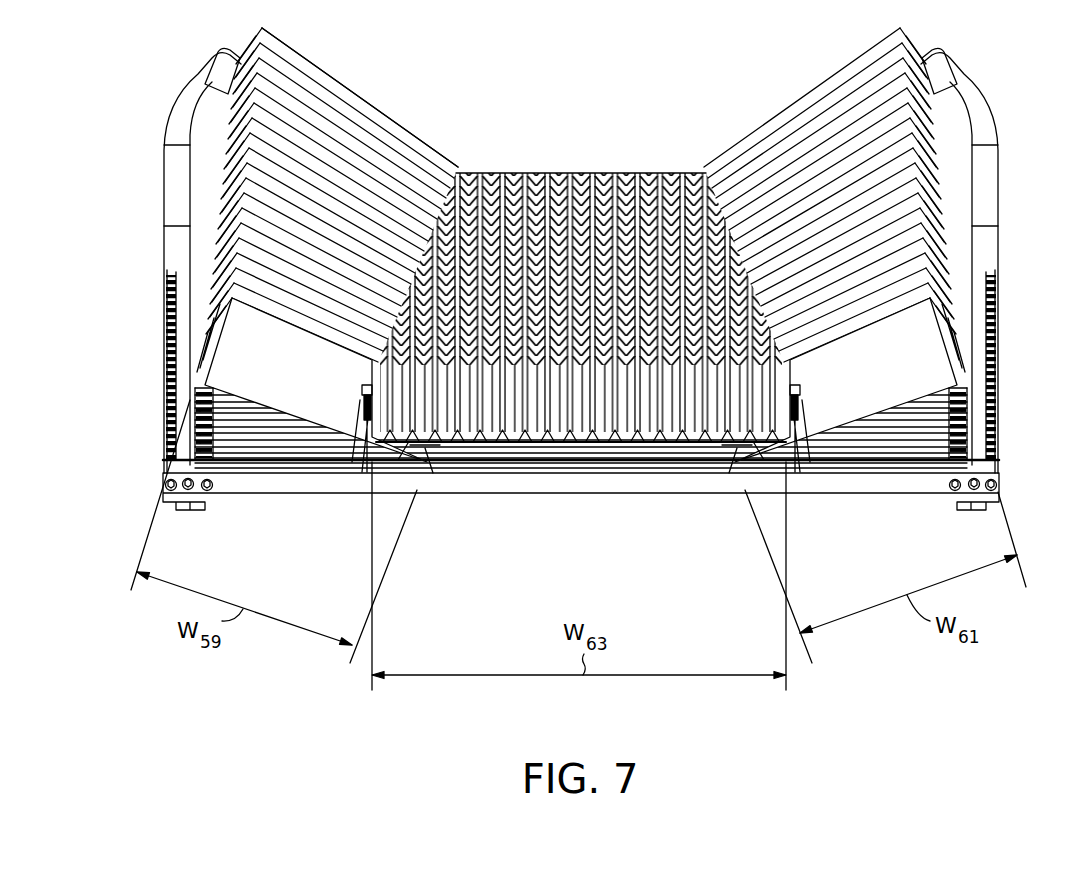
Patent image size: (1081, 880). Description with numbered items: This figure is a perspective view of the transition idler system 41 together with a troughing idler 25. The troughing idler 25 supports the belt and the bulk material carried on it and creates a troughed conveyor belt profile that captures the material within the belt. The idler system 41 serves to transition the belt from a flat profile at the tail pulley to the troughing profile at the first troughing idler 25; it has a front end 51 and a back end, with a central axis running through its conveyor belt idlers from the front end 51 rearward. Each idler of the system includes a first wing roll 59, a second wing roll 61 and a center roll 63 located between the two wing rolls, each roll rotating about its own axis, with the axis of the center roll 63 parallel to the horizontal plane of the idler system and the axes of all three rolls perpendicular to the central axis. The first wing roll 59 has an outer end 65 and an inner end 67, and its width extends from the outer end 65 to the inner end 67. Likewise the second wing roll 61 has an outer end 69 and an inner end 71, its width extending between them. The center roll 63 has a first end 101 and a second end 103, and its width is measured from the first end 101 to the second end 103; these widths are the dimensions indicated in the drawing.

The troughing idler 25 is at (440, 148).
The idler system 41 is at (372, 104).
The front end 51 is at (550, 480).
The first wing roll 59 is at (306, 383).
The second wing roll 61 is at (858, 368).
The center roll 63 is at (581, 317).
The outer end 65 is at (163, 350).
The inner end 67 is at (433, 470).
The outer end 69 is at (953, 347).
The inner end 71 is at (736, 470).
The first end 101 is at (364, 420).
The second end 103 is at (797, 420).